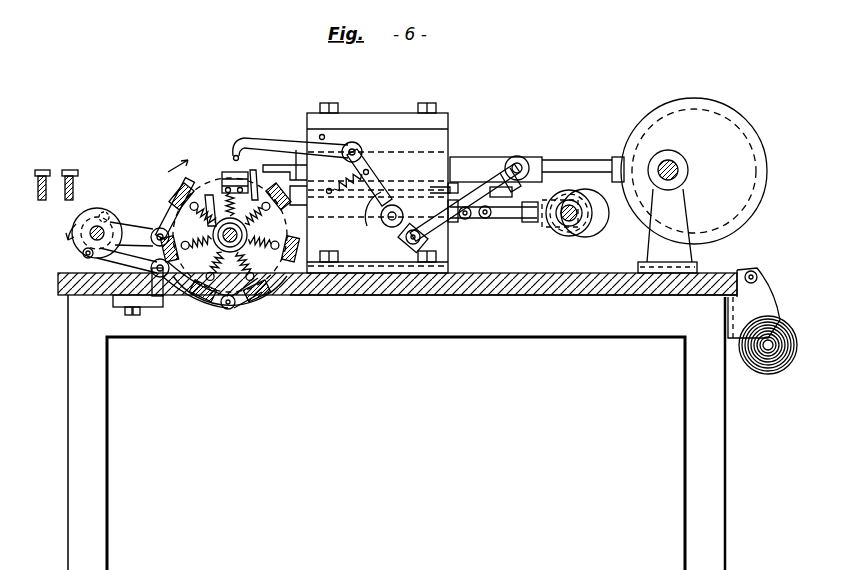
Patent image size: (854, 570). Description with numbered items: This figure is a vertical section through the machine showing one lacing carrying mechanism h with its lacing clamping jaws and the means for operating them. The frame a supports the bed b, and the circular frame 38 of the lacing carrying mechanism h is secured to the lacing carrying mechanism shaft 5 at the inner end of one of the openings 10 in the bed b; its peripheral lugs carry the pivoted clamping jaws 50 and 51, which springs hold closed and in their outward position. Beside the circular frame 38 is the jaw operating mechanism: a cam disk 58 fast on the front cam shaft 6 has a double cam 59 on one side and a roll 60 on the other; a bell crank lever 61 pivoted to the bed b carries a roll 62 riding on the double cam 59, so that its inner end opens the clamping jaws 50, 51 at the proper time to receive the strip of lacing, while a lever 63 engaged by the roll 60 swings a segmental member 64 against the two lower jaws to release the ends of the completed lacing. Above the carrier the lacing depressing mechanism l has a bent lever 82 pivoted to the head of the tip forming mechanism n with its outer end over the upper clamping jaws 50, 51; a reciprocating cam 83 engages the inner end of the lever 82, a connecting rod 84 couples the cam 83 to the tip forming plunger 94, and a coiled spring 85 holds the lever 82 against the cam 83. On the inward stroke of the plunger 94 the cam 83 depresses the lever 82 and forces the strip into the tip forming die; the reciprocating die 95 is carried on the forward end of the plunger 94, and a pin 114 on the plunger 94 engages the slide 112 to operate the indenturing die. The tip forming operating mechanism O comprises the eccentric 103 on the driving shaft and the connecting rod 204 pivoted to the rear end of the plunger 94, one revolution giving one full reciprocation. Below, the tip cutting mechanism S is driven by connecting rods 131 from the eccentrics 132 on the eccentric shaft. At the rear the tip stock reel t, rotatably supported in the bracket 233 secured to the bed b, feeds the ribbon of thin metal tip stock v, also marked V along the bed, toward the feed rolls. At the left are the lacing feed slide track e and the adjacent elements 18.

The frame a is at (66, 403).
The bed b is at (58, 285).
The ribbon of thin metal tip stock V is at (505, 294).
The openings in the bed 10 is at (329, 296).
The tip forming mechanism n is at (380, 114).
The lacing depressing mechanism l is at (369, 164).
The bent lever 82 is at (286, 139).
The clamping jaw 50 is at (227, 162).
The clamping jaw 51 is at (225, 172).
The reciprocating die 95 is at (265, 167).
The coiled spring 85 is at (360, 190).
The reciprocating cam 83 is at (376, 220).
The connecting rod 84 is at (438, 229).
The slide 112 is at (457, 188).
The tip forming plunger 94 is at (489, 160).
The pin 114 is at (540, 163).
The connecting rod 204 is at (593, 167).
The eccentric 103 is at (697, 99).
The tip forming operating mechanism O is at (740, 126).
The tip cutting mechanism S is at (606, 224).
The eccentrics 132 is at (557, 233).
The connecting rods 131 is at (517, 218).
The ribbon of thin metal tip stock v is at (773, 291).
The bracket 233 is at (747, 298).
The tip stock reel t is at (769, 348).
The lacing feed slide track e is at (43, 169).
The pins 18 is at (36, 185).
The cam disk 58 is at (92, 213).
The front cam shaft 6 is at (100, 245).
The double cam 59 is at (78, 240).
The roll 62 is at (106, 214).
The roll 60 is at (84, 255).
The bell crank lever 61 is at (152, 219).
The lacing carrying mechanism h is at (175, 193).
The lever 63 is at (182, 288).
The segmental member 64 is at (243, 299).
The circular frame 38 is at (283, 298).
The lacing carrying mechanism shaft 5 is at (249, 239).